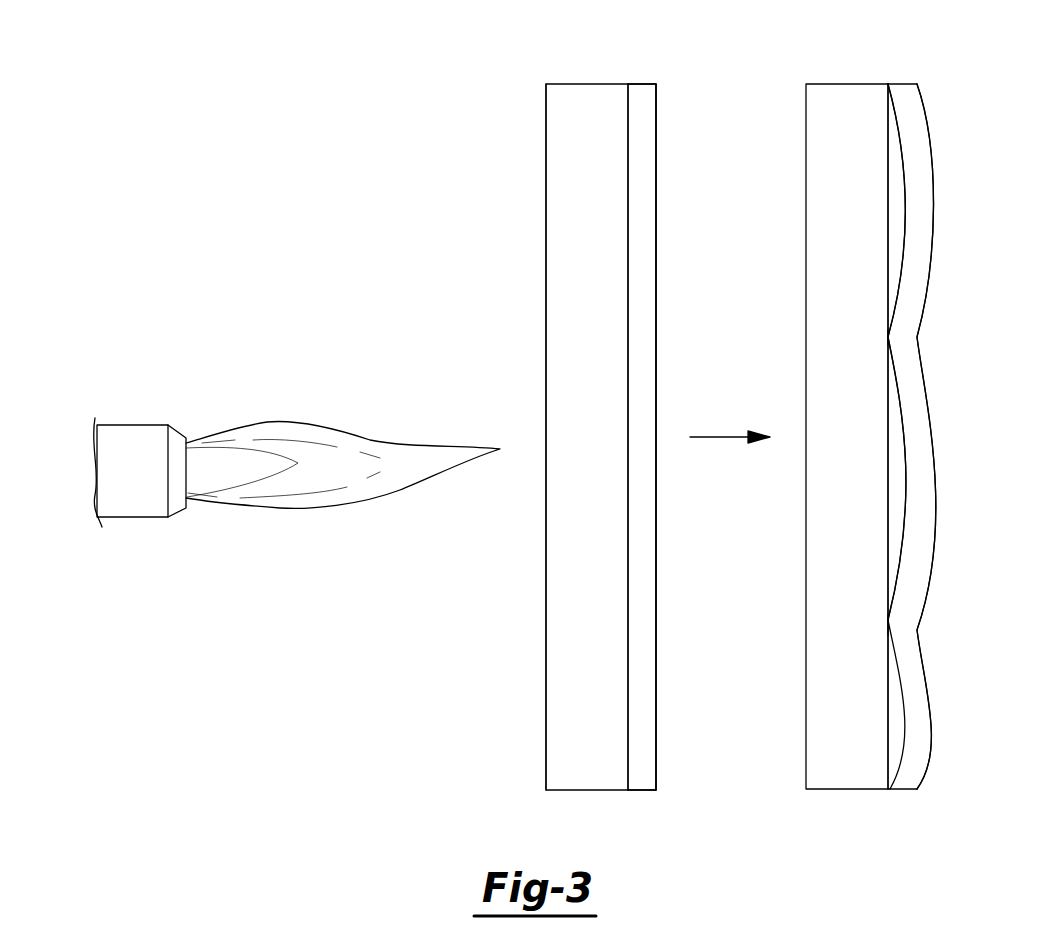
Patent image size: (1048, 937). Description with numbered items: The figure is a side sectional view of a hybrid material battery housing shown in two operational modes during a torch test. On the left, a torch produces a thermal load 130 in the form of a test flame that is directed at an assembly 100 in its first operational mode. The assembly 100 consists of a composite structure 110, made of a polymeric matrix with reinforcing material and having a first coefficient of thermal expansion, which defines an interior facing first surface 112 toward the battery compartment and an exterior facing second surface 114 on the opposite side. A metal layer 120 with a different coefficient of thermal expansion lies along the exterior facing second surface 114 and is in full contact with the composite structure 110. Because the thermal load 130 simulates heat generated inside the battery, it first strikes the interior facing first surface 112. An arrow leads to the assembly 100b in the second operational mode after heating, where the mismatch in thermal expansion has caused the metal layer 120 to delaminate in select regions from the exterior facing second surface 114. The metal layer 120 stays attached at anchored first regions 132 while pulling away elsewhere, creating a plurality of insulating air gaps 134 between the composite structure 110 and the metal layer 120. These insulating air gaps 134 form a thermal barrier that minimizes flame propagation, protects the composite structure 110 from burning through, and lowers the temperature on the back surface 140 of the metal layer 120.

The assembly 100 is at (464, 58).
The assembly in second operational mode 100b is at (782, 58).
The composite structure 110 is at (587, 84).
The interior facing first surface 112 is at (547, 183).
The exterior facing second surface 114 is at (628, 252).
The metal layer 120 is at (641, 790).
The thermal load 130 is at (328, 432).
The anchored first regions 132 is at (888, 343).
The insulating air gaps 134 is at (895, 213).
The back surface 140 is at (656, 506).